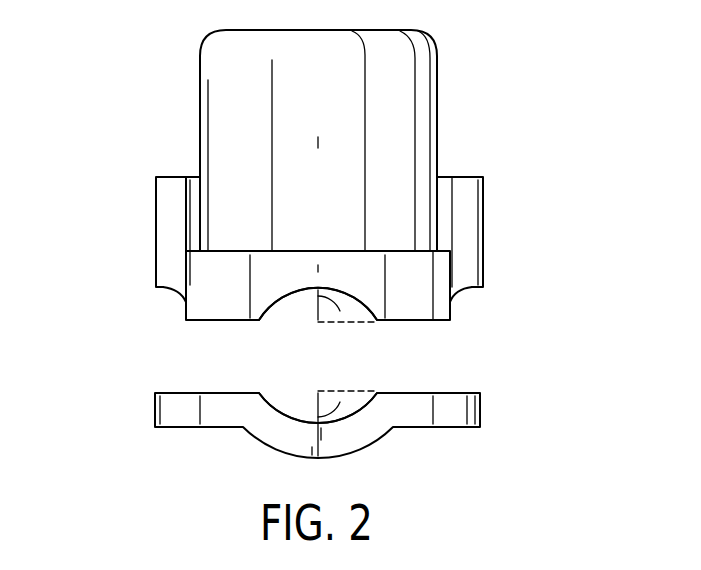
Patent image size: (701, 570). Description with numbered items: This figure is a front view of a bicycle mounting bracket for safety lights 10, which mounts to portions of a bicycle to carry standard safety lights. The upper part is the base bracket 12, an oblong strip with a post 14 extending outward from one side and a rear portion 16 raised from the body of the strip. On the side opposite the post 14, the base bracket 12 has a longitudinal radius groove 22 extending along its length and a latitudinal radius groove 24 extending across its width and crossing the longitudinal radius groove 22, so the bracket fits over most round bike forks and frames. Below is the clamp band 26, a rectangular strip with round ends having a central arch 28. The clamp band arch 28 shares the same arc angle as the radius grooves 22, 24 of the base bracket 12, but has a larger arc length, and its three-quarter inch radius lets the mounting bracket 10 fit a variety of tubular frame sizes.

The bicycle mounting bracket for safety lights 10 is at (557, 90).
The base bracket 12 is at (440, 243).
The post 14 is at (200, 95).
The rear portion 16 is at (158, 203).
The longitudinal radius groove 22 is at (266, 322).
The latitudinal radius groove 24 is at (186, 302).
The clamp band 26 is at (480, 413).
The clamp band arch 28 is at (347, 420).